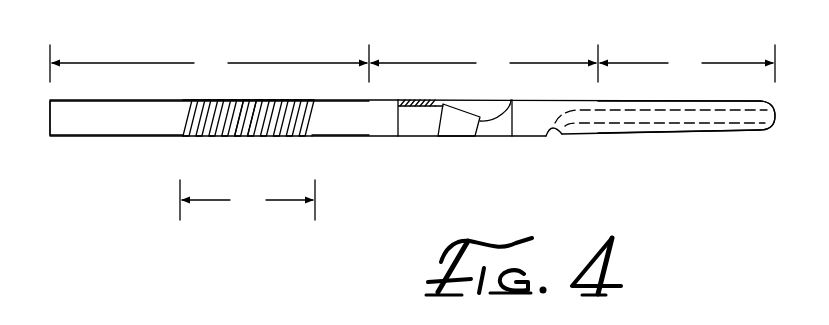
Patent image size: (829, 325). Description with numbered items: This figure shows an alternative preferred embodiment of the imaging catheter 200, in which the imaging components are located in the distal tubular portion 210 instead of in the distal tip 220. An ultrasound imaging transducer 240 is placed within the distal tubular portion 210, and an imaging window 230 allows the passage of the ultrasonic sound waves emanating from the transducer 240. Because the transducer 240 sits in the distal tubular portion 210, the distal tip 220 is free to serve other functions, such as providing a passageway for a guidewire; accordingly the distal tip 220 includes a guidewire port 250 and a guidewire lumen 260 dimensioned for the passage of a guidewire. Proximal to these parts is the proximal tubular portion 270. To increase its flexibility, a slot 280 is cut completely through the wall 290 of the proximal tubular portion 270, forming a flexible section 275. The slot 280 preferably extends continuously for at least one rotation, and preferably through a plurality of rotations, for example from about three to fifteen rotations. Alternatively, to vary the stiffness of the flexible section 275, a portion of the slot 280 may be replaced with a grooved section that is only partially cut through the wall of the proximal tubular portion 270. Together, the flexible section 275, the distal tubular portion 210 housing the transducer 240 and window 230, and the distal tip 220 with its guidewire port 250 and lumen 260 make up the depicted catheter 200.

The imaging catheter 200 is at (200, 37).
The proximal tubular portion 270 is at (209, 90).
The distal tubular portion 210 is at (484, 90).
The distal tip 220 is at (686, 89).
The imaging window 230 is at (490, 99).
The ultrasound imaging transducer 240 is at (459, 128).
The guidewire port 250 is at (553, 140).
The guidewire lumen 260 is at (650, 117).
The flexible section 275 is at (247, 200).
The slot 280 is at (208, 142).
The wall 290 is at (242, 139).